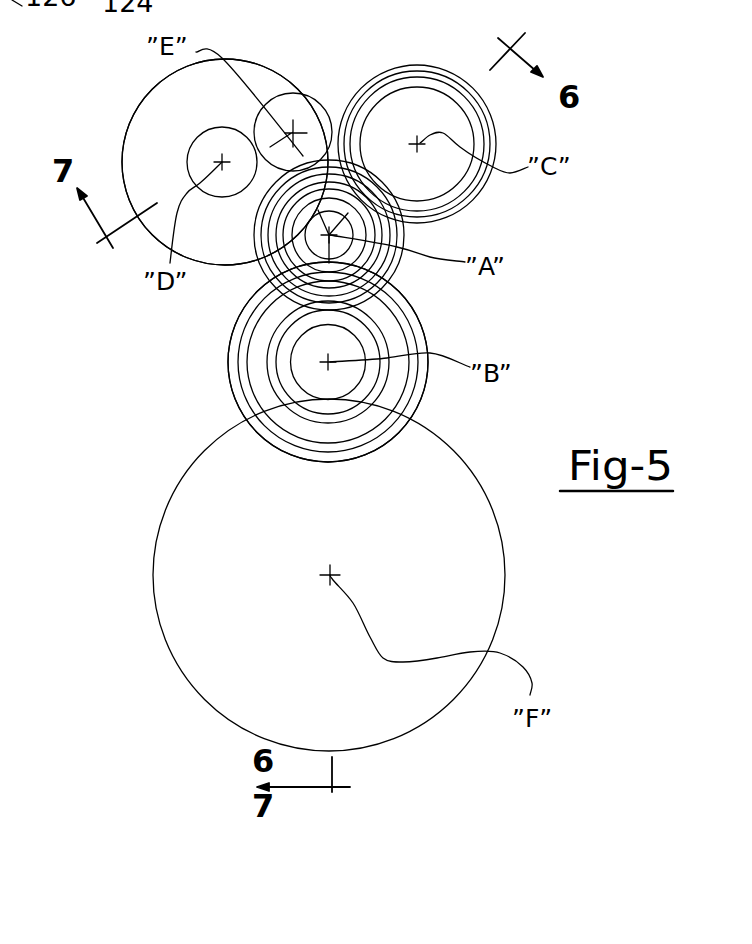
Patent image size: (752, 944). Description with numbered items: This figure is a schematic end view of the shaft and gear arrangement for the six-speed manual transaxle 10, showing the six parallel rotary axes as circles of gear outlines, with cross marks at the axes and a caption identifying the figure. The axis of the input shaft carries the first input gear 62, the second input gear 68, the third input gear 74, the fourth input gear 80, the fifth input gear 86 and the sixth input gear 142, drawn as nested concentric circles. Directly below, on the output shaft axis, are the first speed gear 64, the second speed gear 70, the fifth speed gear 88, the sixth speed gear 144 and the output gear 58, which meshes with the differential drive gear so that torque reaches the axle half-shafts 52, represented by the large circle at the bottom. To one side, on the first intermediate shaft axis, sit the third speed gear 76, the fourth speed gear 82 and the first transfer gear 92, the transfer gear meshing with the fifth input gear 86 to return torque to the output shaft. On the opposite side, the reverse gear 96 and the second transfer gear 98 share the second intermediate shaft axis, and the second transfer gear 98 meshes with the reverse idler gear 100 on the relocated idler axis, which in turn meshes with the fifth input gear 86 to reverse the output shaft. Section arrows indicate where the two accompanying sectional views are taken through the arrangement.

The transaxle 10 is at (612, 13).
The axle half-shafts 52 is at (506, 557).
The output gear 58 is at (293, 355).
The first input gear 62 is at (305, 245).
The first speed gear 64 is at (432, 380).
The second input gear 68 is at (285, 222).
The second speed gear 70 is at (407, 403).
The third input gear 74 is at (336, 180).
The third speed gear 76 is at (473, 193).
The fourth input gear 80 is at (375, 238).
The fourth speed gear 82 is at (434, 67).
The fifth input gear 86 is at (360, 265).
The fifth speed gear 88 is at (380, 337).
The first transfer gear 92 is at (472, 118).
The reverse gear 96 is at (121, 148).
The second transfer gear 98 is at (127, 127).
The reverse idler gear 100 is at (331, 180).
The sixth input gear 142 is at (260, 283).
The sixth speed gear 144 is at (237, 383).